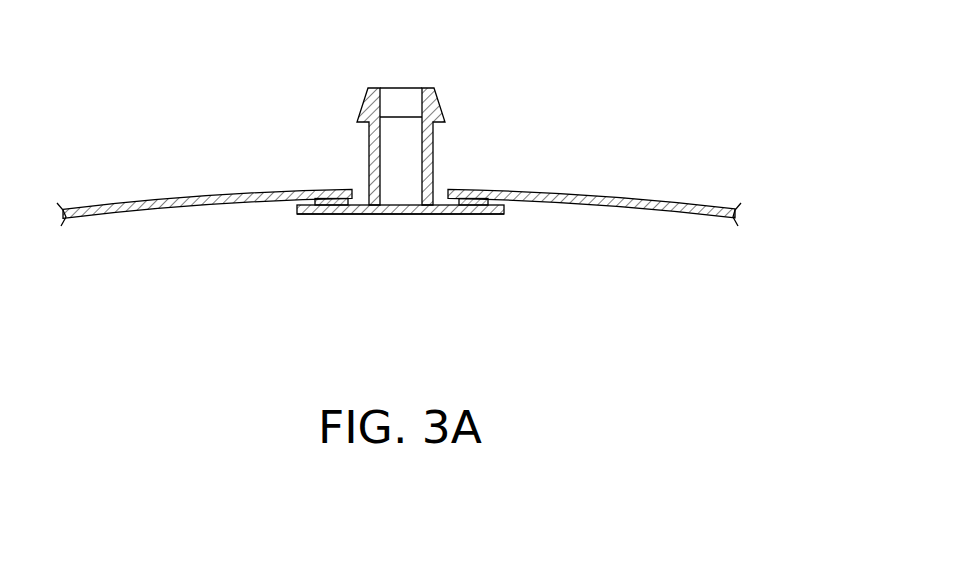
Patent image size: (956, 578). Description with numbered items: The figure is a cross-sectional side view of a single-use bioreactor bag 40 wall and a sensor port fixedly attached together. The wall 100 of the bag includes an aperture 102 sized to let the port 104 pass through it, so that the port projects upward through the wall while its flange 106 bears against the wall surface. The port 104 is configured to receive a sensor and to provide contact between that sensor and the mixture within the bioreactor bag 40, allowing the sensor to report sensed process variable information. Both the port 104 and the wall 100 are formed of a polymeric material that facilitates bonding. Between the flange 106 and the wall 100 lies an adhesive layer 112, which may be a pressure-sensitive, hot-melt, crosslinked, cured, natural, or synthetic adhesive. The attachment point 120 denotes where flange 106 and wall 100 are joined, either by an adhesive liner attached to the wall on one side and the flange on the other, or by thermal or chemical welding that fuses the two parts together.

The bioreactor bag 40 is at (740, 164).
The wall 100 is at (548, 190).
The aperture 102 is at (449, 196).
The port 104 is at (412, 142).
The flange 106 is at (367, 217).
The adhesive layer 112 is at (318, 196).
The attachment point 120 is at (465, 222).